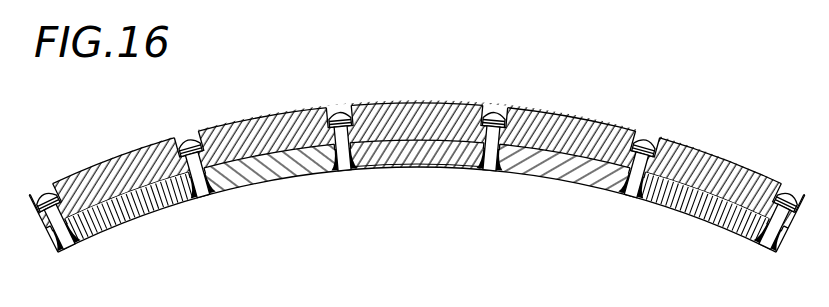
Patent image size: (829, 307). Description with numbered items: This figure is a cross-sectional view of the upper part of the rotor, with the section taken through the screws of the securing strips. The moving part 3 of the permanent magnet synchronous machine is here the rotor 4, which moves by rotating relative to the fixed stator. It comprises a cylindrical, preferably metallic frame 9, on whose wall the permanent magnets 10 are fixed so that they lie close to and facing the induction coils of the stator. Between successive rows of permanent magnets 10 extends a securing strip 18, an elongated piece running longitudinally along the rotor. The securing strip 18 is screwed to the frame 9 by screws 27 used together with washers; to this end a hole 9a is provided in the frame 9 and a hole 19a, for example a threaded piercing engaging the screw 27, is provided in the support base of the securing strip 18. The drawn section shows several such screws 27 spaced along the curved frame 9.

The moving part 3 is at (417, 162).
The rotor 4 is at (677, 97).
The frame 9 is at (413, 100).
The hole 9a is at (543, 113).
The permanent magnet 10 is at (273, 170).
The securing strip 18 is at (478, 162).
The hole 19a is at (503, 163).
The screw 27 is at (192, 167).